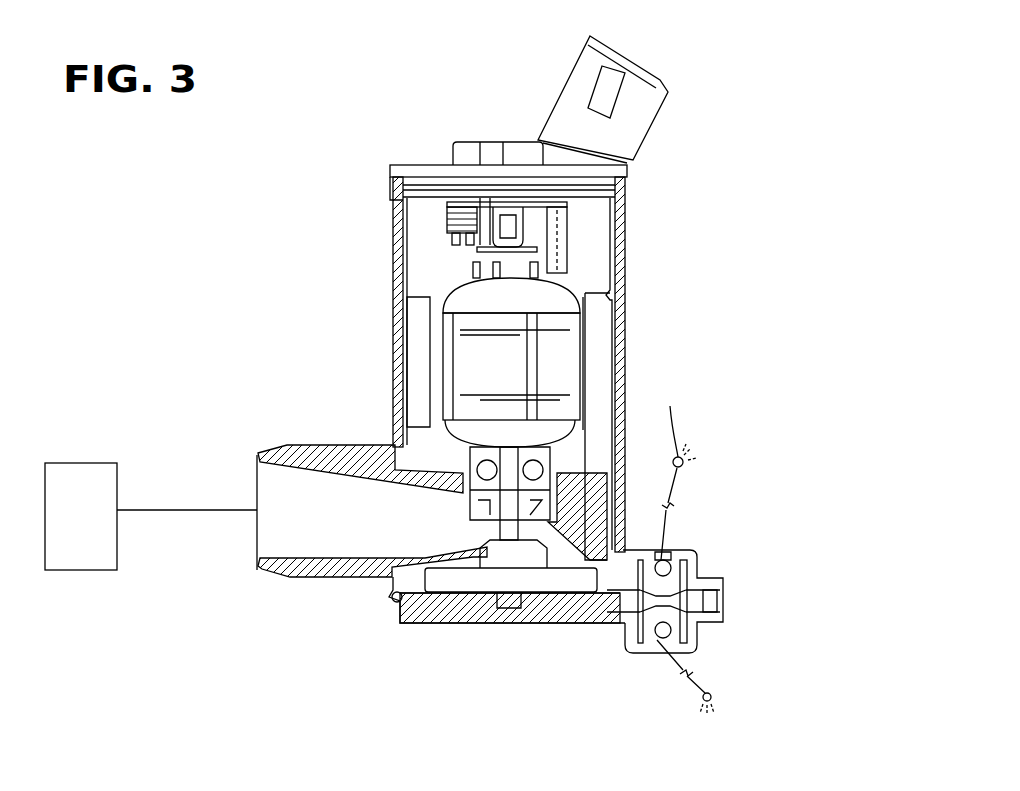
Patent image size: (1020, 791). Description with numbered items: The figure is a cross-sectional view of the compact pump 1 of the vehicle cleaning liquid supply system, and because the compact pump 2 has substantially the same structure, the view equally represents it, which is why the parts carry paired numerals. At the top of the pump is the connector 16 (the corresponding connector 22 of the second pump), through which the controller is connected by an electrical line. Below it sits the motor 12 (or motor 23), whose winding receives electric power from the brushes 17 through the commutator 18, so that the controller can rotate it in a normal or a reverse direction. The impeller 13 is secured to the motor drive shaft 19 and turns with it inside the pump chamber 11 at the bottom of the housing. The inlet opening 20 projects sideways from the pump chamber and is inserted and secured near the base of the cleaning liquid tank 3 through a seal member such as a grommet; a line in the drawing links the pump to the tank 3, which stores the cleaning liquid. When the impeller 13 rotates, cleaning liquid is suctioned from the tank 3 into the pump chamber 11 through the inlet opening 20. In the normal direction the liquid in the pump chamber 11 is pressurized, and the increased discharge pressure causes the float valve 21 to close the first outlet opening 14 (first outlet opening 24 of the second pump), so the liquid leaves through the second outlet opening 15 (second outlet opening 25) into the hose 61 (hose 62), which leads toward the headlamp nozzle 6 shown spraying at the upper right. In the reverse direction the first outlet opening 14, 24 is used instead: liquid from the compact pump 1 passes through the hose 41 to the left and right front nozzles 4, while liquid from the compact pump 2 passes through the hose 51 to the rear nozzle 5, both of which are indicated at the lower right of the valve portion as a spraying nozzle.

The compact pump 1 is at (577, 382).
The compact pump 2 is at (637, 313).
The cleaning liquid tank 3 is at (80, 473).
The front nozzle 4 is at (749, 716).
The rear nozzle 5 is at (714, 700).
The headlamp nozzle 6 is at (678, 470).
The pump chamber 11 is at (396, 600).
The motor 12 is at (430, 362).
The impeller 13 is at (457, 577).
The first outlet opening 14 is at (723, 601).
The second outlet opening 15 is at (739, 535).
The connector 16 is at (559, 99).
The brush 17 is at (510, 223).
The commutator 18 is at (513, 226).
The motor drive shaft 19 is at (505, 470).
The inlet opening 20 is at (262, 530).
The float valve 21 is at (700, 583).
The connector 22 is at (563, 98).
The motor 23 is at (450, 306).
The first outlet opening 24 is at (690, 622).
The second outlet opening 25 is at (665, 565).
The hose 41 is at (740, 666).
The hose 51 is at (690, 663).
The hose 61 is at (739, 503).
The hose 62 is at (663, 523).